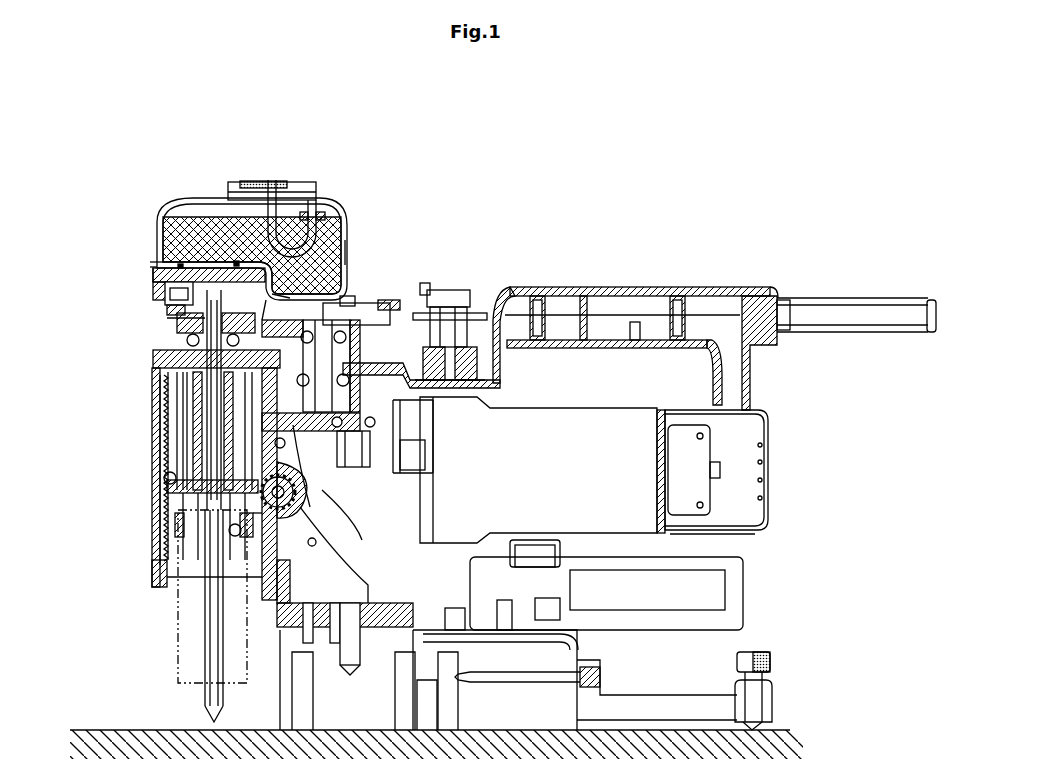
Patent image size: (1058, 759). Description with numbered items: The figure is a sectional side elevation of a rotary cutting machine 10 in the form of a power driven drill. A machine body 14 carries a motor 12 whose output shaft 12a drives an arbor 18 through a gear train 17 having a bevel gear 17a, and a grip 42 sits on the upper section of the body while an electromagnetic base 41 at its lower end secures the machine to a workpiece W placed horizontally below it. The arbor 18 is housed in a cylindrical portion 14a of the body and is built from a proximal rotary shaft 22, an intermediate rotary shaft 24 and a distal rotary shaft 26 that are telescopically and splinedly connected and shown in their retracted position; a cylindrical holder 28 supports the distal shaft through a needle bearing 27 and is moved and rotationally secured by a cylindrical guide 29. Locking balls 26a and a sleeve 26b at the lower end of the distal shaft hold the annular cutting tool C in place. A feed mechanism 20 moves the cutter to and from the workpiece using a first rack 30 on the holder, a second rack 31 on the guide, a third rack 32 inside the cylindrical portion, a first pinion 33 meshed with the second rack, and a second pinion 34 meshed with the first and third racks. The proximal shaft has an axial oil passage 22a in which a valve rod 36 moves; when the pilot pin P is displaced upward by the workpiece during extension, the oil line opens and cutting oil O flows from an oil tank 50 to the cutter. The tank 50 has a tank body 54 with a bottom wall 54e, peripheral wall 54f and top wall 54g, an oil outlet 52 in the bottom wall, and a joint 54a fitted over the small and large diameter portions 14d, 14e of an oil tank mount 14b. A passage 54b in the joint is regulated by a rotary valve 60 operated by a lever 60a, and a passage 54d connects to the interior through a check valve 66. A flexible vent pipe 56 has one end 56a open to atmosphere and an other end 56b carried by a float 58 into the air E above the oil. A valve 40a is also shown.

The rotary cutting machine 10 is at (522, 189).
The motor 12 is at (548, 466).
The output shaft 12a is at (397, 472).
The machine body 14 is at (518, 285).
The cylindrical portion 14a is at (153, 377).
The oil tank mount 14b is at (177, 311).
The small diameter portion 14d is at (153, 296).
The large diameter portion 14e is at (180, 318).
The gear train 17 is at (366, 348).
The bevel gear 17a is at (387, 457).
The arbor 18 is at (180, 440).
The feed mechanism 20 is at (148, 485).
The proximal rotary shaft 22 is at (165, 327).
The oil passage 22a is at (180, 475).
The intermediate rotary shaft 24 is at (183, 390).
The distal rotary shaft 26 is at (160, 430).
The locking balls 26a is at (222, 522).
The sleeve 26b is at (233, 530).
The needle bearing 27 is at (173, 417).
The cylindrical holder 28 is at (160, 377).
The cylindrical guide 29 is at (177, 403).
The first rack 30 is at (183, 450).
The second rack 31 is at (307, 497).
The third rack 32 is at (173, 543).
The first pinion 33 is at (317, 507).
The second pinion 34 is at (160, 497).
The valve rod 36 is at (187, 460).
The valve 40a is at (165, 285).
The electromagnetic base 41 is at (277, 712).
The grip 42 is at (570, 347).
The oil tank 50 is at (289, 212).
The oil outlet 52 is at (153, 275).
The tank body 54 is at (343, 220).
The joint 54a is at (227, 302).
The passage 54b is at (262, 220).
The passage 54d is at (231, 225).
The bottom wall 54e is at (288, 296).
The peripheral wall 54f is at (347, 268).
The top wall 54g is at (349, 201).
The vent pipe 56 is at (344, 191).
The end of vent pipe 56a is at (271, 230).
The other end of vent pipe 56b is at (313, 215).
The float 58 is at (319, 213).
The rotary valve 60 is at (152, 272).
The lever 60a is at (152, 266).
The check valve 66 is at (198, 210).
The air E is at (203, 222).
The liquid level L is at (240, 212).
The cutting oil O is at (304, 320).
The cutting tool C is at (178, 640).
The pilot pin P is at (205, 697).
The workpiece W is at (136, 730).